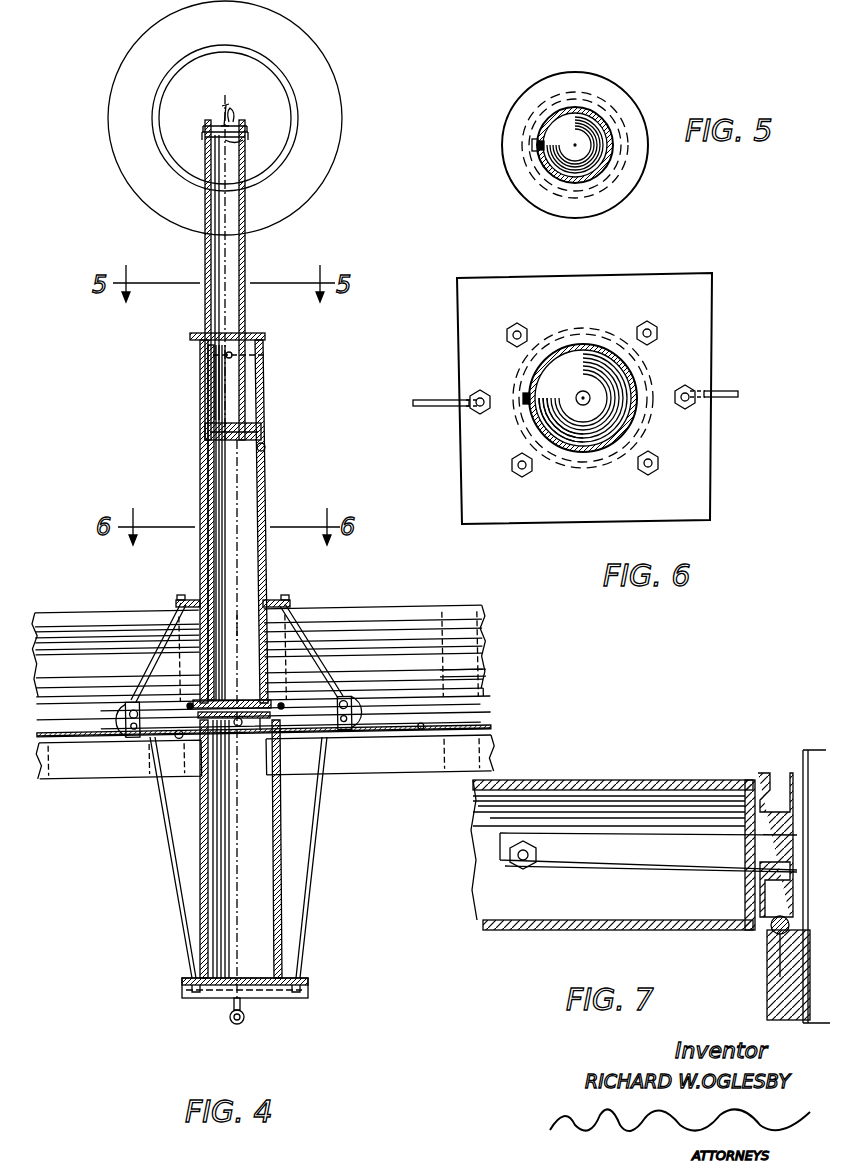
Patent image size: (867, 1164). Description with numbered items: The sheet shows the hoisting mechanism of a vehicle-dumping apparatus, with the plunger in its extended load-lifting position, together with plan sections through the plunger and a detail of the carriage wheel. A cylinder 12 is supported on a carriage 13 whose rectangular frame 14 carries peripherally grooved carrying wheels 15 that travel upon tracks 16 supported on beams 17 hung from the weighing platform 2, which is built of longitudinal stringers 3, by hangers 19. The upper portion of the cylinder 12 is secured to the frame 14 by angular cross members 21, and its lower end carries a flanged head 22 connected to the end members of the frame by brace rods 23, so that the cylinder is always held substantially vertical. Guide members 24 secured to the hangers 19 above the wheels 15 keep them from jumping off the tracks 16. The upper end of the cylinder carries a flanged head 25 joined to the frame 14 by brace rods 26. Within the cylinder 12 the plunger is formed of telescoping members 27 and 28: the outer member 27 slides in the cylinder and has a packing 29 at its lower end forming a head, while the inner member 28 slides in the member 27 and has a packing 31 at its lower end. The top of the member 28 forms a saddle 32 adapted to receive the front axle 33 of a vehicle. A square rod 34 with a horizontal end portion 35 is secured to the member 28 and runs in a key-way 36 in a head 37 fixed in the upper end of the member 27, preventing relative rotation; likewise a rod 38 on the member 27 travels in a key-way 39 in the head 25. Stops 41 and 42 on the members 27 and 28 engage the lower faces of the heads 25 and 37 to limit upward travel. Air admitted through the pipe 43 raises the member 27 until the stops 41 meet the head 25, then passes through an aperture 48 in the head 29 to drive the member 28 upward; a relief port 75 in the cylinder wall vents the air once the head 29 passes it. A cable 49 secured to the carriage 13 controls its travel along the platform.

In FIG. 4, the weighing platform 2 is at (62, 610).
In FIG. 4, the stringers 3 is at (470, 645).
In FIG. 4, the cylinder 12 is at (279, 822).
In FIG. 6, the cylinder 12 is at (585, 328).
In FIG. 4, the carriage 13 is at (165, 695).
In FIG. 7, the carriage 13 is at (675, 775).
In FIG. 4, the rectangular frame 14 is at (360, 720).
In FIG. 7, the rectangular frame 14 is at (500, 822).
In FIG. 4, the carrying wheels 15 is at (118, 712).
In FIG. 7, the carrying wheels 15 is at (771, 770).
In FIG. 4, the tracks 16 is at (422, 726).
In FIG. 7, the tracks 16 is at (770, 930).
In FIG. 4, the beams 17 is at (405, 765).
In FIG. 7, the beams 17 is at (770, 973).
In FIG. 4, the hangers 19 is at (483, 696).
In FIG. 7, the hangers 19 is at (814, 745).
In FIG. 4, the cross members 21 is at (176, 738).
In FIG. 4, the flanged head 22 is at (303, 982).
In FIG. 4, the brace rods 23 is at (173, 880).
In FIG. 4, the guide members 24 is at (484, 672).
In FIG. 4, the flanged head 25 is at (283, 599).
In FIG. 6, the flanged head 25 is at (525, 512).
In FIG. 4, the brace rods 26 is at (162, 640).
In FIG. 6, the brace rods 26 is at (428, 399).
In FIG. 4, the telescoping member 27 is at (264, 478).
In FIG. 5, the telescoping member 27 is at (604, 95).
In FIG. 6, the telescoping member 27 is at (630, 375).
In FIG. 4, the telescoping member 28 is at (247, 258).
In FIG. 5, the telescoping member 28 is at (608, 160).
In FIG. 4, the packing 29 is at (262, 720).
In FIG. 4, the packing 31 is at (266, 445).
In FIG. 4, the saddle 32 is at (234, 118).
In FIG. 4, the front axle 33 is at (225, 104).
In FIG. 4, the rod 34 is at (204, 136).
In FIG. 5, the rod 34 is at (539, 147).
In FIG. 4, the horizontal end portion 35 is at (226, 141).
In FIG. 5, the key-way 36 is at (534, 141).
In FIG. 4, the head 37 is at (257, 333).
In FIG. 5, the head 37 is at (632, 190).
In FIG. 4, the rod 38 is at (200, 468).
In FIG. 6, the key-way 39 is at (523, 400).
In FIG. 4, the stops 41 is at (238, 633).
In FIG. 4, the stops 42 is at (266, 355).
In FIG. 4, the pipe 43 is at (240, 1024).
In FIG. 4, the aperture 48 is at (238, 700).
In FIG. 6, the aperture 48 is at (585, 405).
In FIG. 4, the cable 49 is at (45, 735).
In FIG. 4, the relief port 75 is at (238, 727).